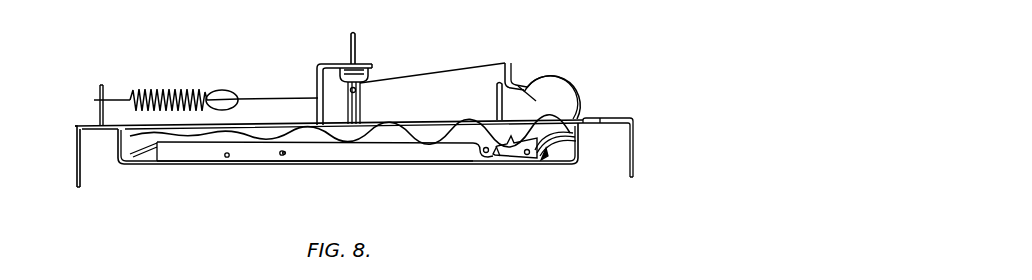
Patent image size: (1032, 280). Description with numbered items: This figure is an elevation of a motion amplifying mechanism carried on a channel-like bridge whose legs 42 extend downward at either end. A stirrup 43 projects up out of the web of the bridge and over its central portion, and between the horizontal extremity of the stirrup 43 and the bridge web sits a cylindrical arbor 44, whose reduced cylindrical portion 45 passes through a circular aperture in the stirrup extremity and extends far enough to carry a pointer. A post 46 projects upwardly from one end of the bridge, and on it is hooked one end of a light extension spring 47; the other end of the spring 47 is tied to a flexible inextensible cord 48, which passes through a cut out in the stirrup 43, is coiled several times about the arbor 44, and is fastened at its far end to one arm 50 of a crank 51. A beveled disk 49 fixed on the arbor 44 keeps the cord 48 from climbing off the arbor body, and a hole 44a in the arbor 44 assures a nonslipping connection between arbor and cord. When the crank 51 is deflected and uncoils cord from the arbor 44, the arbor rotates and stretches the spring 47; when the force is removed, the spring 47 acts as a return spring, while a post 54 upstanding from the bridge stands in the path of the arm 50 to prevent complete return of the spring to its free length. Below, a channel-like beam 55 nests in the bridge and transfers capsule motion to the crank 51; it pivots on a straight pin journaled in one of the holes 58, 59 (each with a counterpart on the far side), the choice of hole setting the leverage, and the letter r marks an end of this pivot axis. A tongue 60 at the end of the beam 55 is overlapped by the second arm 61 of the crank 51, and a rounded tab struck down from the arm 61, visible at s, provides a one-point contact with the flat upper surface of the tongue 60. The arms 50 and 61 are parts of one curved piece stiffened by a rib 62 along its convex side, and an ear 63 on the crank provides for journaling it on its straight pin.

The mounting legs 42 is at (80, 187).
The stirrup 43 is at (336, 62).
The arbor 44 is at (362, 107).
The hole 44a is at (347, 91).
The reduced cylindrical portion 45 is at (357, 60).
The post 46 is at (100, 86).
The extension spring 47 is at (157, 88).
The cord 48 is at (275, 97).
The beveled disk 49 is at (370, 75).
The arm 50 is at (568, 90).
The crank 51 is at (548, 158).
The post 54 is at (497, 93).
The beam 55 is at (372, 154).
The hole 58 is at (284, 156).
The hole 59 is at (229, 157).
The tongue 60 is at (480, 158).
The arm 61 is at (518, 160).
The rib 62 is at (578, 109).
The ear 63 is at (541, 160).
The end of pivot axis of beam r is at (282, 156).
The tab s is at (500, 157).